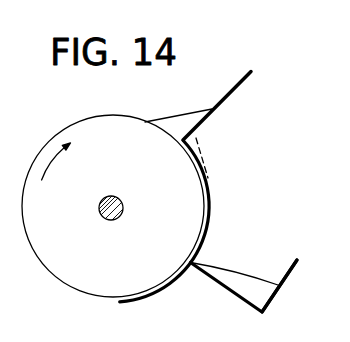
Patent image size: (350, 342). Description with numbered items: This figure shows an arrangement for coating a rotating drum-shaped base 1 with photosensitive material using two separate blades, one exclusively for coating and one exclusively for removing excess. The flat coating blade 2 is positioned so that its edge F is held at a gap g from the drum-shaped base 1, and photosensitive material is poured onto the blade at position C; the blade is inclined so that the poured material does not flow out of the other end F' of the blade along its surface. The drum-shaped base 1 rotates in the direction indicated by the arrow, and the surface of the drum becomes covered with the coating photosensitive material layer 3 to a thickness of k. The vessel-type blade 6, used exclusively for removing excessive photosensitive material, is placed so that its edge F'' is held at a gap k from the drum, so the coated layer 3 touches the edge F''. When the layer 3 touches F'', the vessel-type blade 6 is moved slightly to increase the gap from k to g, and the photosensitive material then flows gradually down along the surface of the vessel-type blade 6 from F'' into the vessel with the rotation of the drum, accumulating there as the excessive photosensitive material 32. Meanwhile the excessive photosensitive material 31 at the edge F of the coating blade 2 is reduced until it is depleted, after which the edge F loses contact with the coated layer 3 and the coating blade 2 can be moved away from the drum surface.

The drum-shaped base 1 is at (57, 268).
The coating blade 2 is at (226, 99).
The coating photosensitive material layer 3 is at (208, 201).
The vessel-type blade 6 is at (276, 298).
The excessive photosensitive material 31 is at (172, 125).
The excessive photosensitive material 32 is at (257, 291).
The position C is at (176, 141).
The edge of coating blade F is at (202, 136).
The other end of blade F' is at (266, 83).
The edge of vessel-type blade F'' is at (190, 287).
The gap g is at (170, 174).
The gap k is at (181, 222).